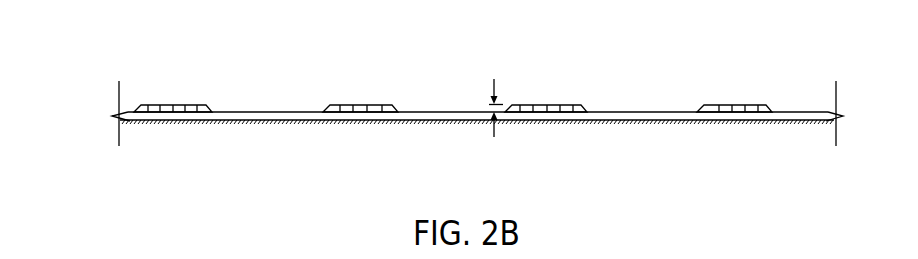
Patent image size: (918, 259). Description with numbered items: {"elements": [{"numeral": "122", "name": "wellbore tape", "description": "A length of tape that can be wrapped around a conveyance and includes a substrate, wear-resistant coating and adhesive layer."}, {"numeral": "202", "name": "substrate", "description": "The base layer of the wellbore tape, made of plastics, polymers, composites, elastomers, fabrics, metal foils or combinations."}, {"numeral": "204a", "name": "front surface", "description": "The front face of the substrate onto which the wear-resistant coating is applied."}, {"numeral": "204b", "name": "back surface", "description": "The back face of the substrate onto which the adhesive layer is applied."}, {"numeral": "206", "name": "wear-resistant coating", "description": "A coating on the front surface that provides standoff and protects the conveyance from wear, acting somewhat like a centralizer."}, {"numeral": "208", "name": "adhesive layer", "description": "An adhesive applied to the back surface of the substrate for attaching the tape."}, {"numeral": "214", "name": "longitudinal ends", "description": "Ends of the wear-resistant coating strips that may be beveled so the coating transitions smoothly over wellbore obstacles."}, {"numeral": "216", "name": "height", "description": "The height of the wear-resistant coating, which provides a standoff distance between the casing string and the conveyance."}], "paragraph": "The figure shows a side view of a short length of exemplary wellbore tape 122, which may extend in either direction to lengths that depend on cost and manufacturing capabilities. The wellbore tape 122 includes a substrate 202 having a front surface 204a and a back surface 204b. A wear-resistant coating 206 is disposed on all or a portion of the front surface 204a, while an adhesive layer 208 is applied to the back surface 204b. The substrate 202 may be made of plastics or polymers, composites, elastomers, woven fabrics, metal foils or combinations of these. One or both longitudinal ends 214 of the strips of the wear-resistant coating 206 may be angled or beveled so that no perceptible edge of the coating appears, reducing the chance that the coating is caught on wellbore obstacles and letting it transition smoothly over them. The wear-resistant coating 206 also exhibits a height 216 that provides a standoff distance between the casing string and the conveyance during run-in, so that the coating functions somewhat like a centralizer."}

The light source assembly 122 is at (182, 48).
The substrate 202 is at (636, 118).
The first surface of substrate 204a is at (425, 112).
The second surface of substrate 204b is at (247, 123).
The electrical contact pads 206 is at (338, 103).
The backing layer 208 is at (385, 127).
The contact pad 214 is at (772, 105).
The pad thickness 216 is at (497, 82).